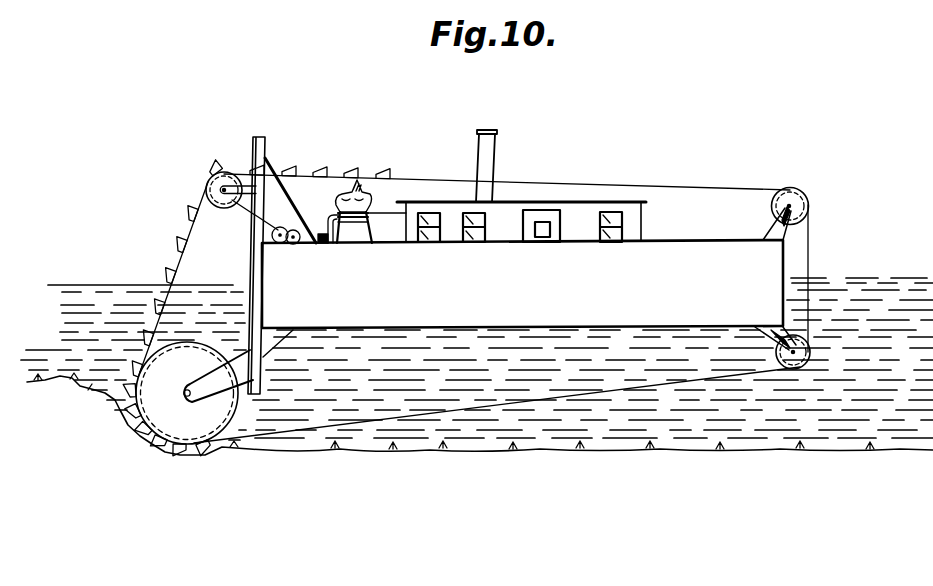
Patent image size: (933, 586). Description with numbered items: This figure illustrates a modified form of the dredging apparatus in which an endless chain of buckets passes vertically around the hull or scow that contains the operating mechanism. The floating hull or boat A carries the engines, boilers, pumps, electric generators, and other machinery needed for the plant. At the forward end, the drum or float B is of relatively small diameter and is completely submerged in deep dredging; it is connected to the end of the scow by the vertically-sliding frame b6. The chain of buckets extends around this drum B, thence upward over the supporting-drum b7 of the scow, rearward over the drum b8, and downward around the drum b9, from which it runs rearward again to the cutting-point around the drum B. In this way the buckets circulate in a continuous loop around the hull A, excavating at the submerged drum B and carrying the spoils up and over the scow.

The floating hull or boat A is at (522, 229).
The drum or float B is at (188, 399).
The vertically-sliding frame b6 is at (252, 264).
The supporting-drum b7 is at (223, 171).
The drum b8 is at (807, 197).
The drum b9 is at (809, 357).